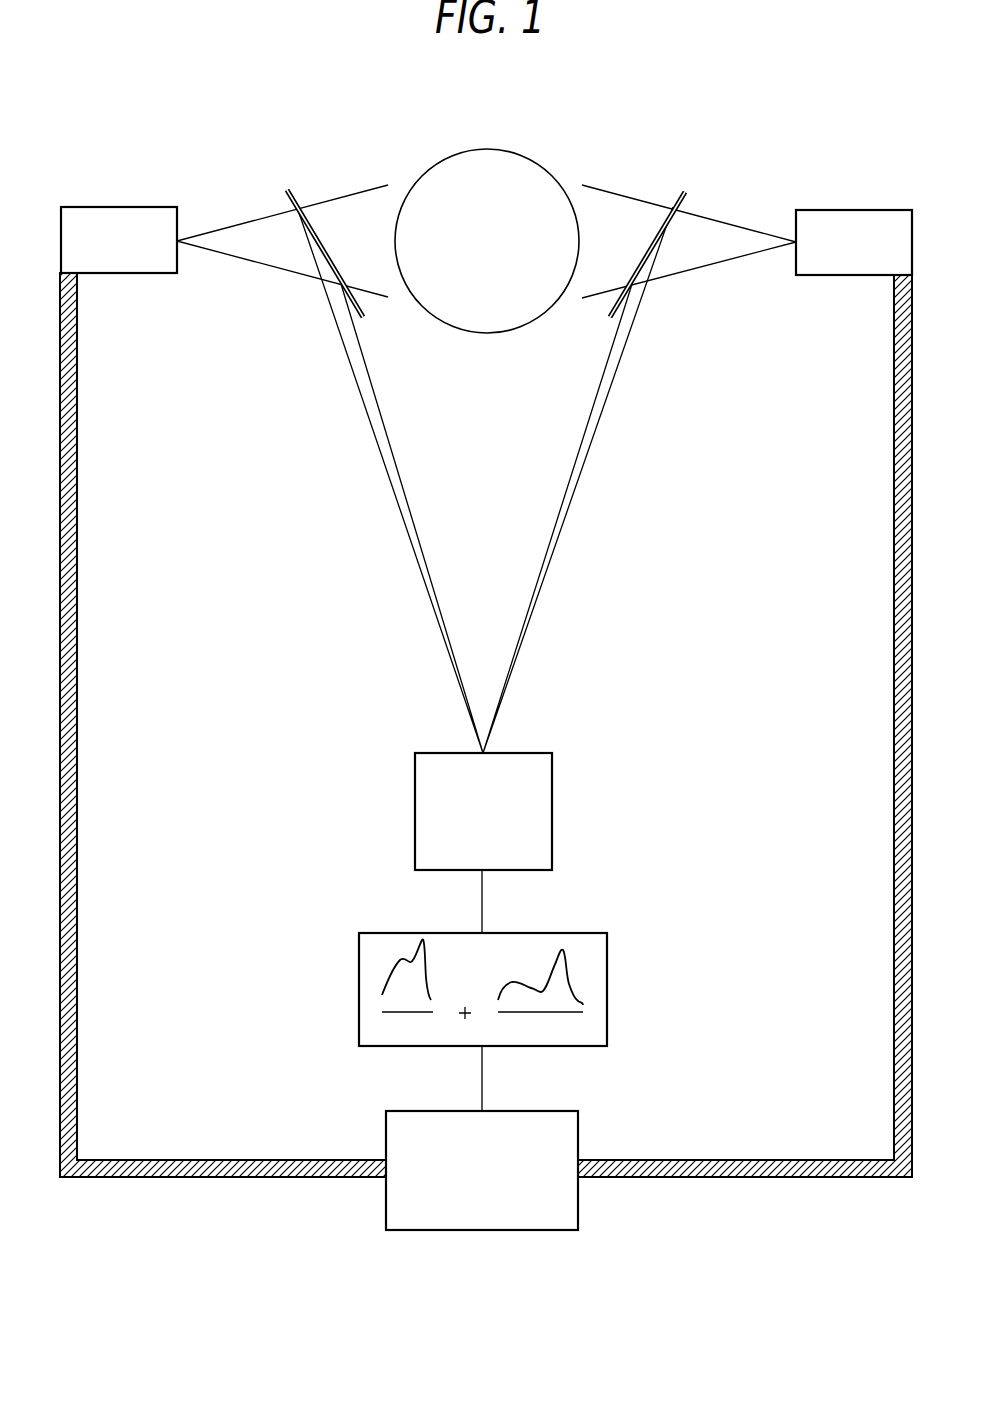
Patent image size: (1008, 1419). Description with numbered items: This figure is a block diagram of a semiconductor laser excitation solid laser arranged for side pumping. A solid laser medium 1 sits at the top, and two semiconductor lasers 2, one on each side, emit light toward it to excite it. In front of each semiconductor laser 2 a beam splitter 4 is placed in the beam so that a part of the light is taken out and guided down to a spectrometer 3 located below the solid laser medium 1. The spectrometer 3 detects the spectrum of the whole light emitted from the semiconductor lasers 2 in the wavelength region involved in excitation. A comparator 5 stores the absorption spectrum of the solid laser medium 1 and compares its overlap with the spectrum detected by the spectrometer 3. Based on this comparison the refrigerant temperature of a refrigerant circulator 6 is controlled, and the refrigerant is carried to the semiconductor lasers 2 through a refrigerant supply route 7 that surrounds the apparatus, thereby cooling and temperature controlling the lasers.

The solid laser medium 1 is at (483, 150).
The semiconductor laser 2 is at (120, 207).
The spectrometer 3 is at (552, 808).
The beam splitter 4 is at (293, 191).
The comparator 5 is at (607, 985).
The refrigerant circulator 6 is at (578, 1136).
The refrigerant supply route 7 is at (228, 1178).